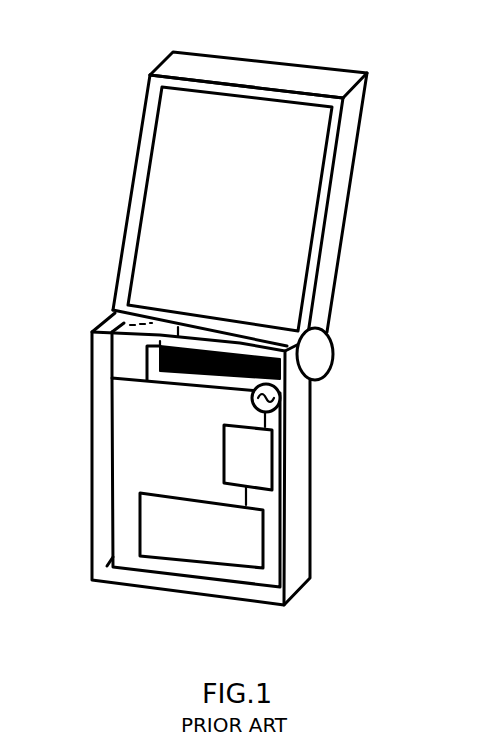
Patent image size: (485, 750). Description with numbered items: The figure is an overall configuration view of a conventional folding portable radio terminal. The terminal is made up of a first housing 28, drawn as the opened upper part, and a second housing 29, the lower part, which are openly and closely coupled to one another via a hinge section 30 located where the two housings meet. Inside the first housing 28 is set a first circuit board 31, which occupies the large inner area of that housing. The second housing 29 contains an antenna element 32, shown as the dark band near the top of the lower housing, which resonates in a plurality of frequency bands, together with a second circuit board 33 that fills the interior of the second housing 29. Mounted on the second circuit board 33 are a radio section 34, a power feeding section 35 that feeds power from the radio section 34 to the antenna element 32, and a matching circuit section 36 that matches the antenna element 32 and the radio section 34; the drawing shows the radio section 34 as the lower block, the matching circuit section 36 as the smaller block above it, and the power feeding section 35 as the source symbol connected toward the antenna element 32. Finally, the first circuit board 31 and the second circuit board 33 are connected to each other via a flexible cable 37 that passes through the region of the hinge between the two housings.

The first housing 28 is at (265, 80).
The second housing 29 is at (255, 593).
The hinge section 30 is at (320, 352).
The first circuit board 31 is at (235, 207).
The antenna element 32 is at (218, 355).
The second circuit board 33 is at (147, 458).
The radio section 34 is at (201, 530).
The power feeding section 35 is at (290, 399).
The matching circuit section 36 is at (248, 458).
The flexible cable 37 is at (123, 357).